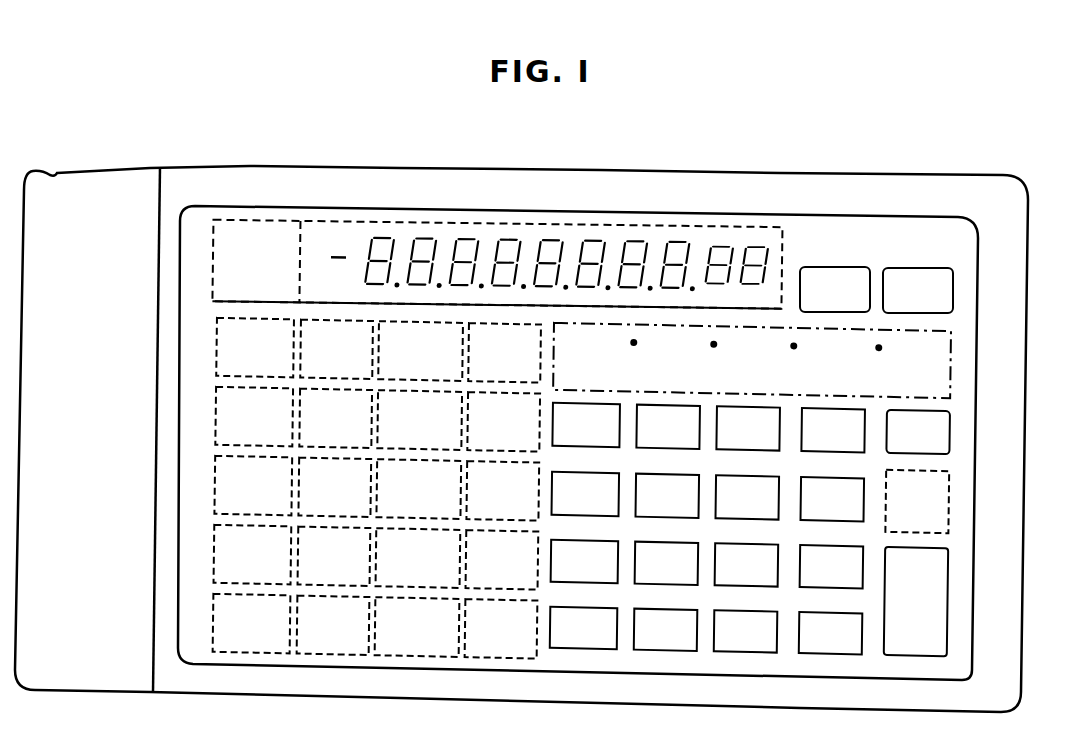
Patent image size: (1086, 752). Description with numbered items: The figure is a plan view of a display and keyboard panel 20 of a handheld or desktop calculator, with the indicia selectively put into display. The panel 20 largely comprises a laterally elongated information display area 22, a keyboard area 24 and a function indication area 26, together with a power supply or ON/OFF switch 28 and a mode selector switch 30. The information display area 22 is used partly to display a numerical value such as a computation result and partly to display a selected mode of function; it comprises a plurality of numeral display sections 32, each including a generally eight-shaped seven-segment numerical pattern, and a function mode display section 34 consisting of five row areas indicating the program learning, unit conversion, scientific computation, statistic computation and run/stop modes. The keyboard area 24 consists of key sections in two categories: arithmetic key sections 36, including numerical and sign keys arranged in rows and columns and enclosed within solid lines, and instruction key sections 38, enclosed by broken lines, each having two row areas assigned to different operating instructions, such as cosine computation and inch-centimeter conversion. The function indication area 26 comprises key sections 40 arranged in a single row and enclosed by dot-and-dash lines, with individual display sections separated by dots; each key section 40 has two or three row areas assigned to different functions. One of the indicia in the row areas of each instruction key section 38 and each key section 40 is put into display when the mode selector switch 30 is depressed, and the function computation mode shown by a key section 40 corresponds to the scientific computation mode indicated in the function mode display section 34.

The display and keyboard panel 20 is at (586, 150).
The information display area 22 is at (717, 222).
The keyboard area 24 is at (984, 628).
The function indication area 26 is at (964, 385).
The ON/OFF switch 28 is at (922, 267).
The mode selector switch 30 is at (828, 266).
The numeral display sections 32 is at (431, 222).
The function mode display section 34 is at (253, 215).
The arithmetic key sections 36 is at (683, 650).
The instruction key sections 38 is at (953, 497).
The key sections 40 is at (874, 327).